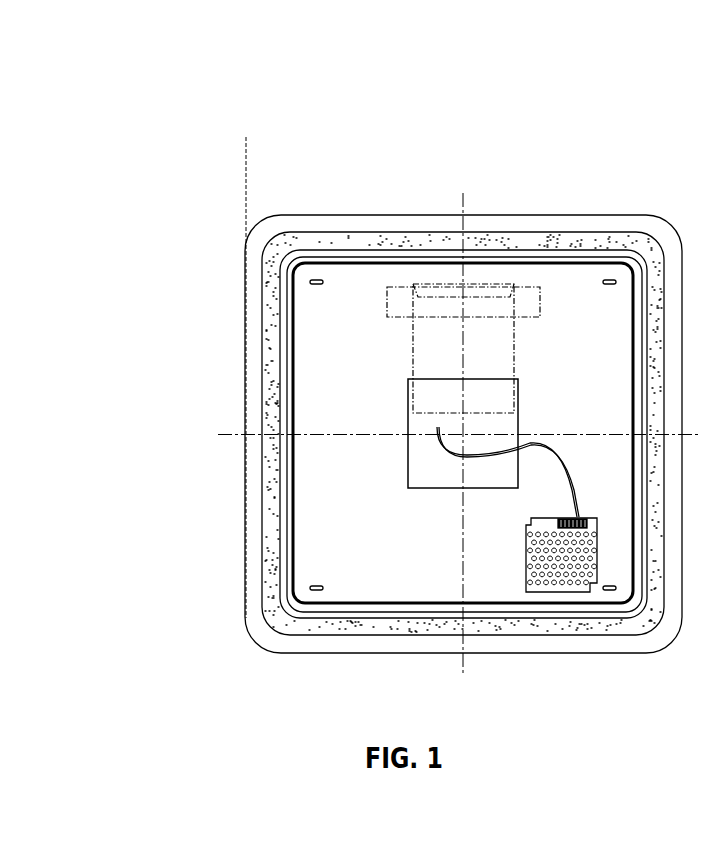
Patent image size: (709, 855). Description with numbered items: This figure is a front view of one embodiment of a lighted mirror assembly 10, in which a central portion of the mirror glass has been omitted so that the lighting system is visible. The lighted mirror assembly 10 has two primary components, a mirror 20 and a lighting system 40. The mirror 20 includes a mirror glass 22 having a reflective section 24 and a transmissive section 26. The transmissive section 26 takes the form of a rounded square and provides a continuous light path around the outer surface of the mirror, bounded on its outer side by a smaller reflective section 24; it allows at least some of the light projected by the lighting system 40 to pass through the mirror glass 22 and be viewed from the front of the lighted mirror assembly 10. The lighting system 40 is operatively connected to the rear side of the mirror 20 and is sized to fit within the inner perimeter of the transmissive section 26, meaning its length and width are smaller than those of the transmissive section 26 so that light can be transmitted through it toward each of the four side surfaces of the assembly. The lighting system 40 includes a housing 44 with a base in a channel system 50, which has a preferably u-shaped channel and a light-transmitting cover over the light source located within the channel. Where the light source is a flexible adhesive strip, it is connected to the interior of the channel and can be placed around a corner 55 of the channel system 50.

The lighted mirror assembly 10 is at (74, 130).
The mirror 20 is at (368, 200).
The mirror glass 22 is at (307, 222).
The reflective section 24 is at (250, 230).
The transmissive section 26 is at (243, 275).
The lighting system 40 is at (272, 364).
The housing 44 is at (369, 352).
The channel system 50 is at (298, 407).
The corner 55 is at (615, 257).